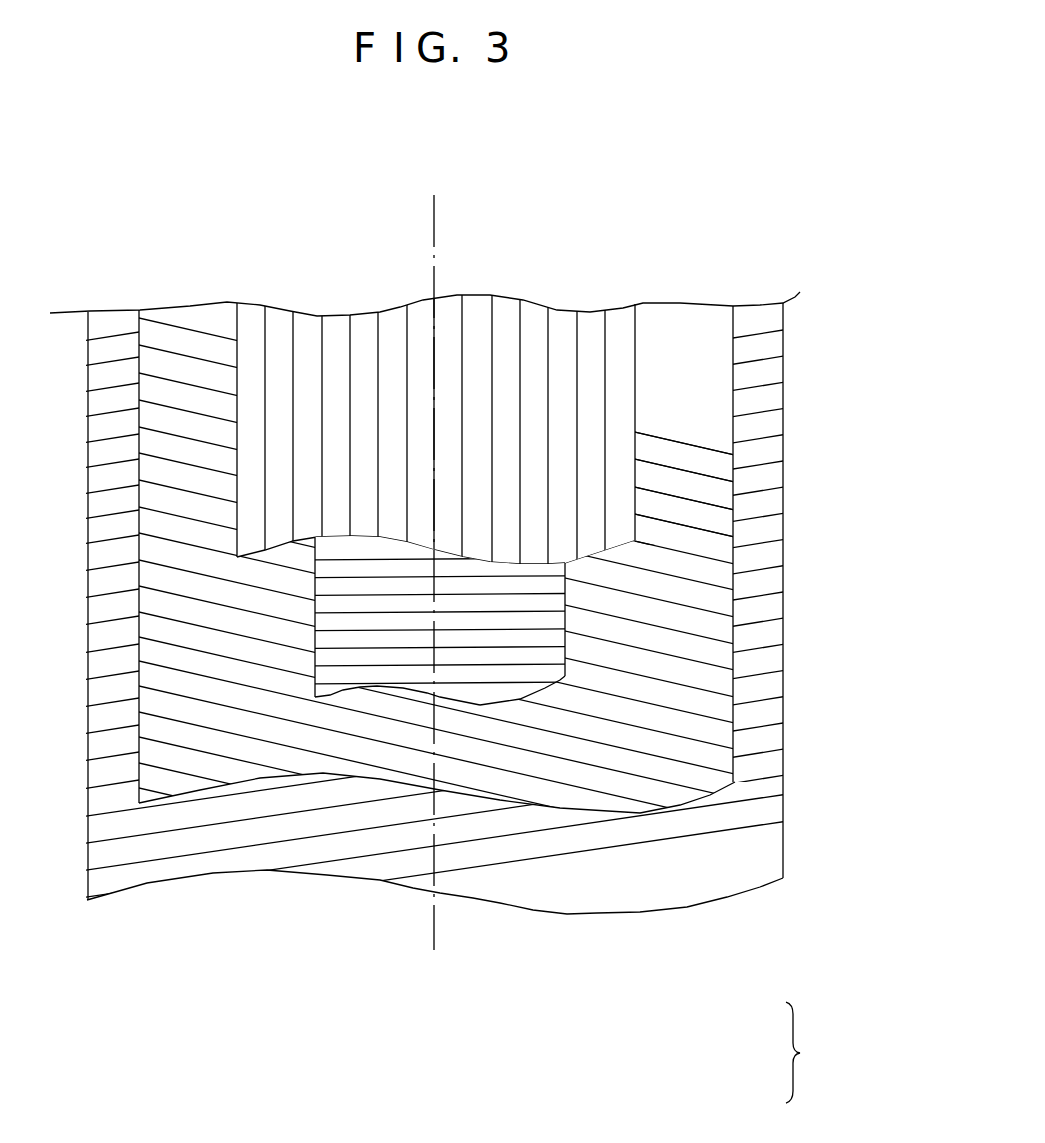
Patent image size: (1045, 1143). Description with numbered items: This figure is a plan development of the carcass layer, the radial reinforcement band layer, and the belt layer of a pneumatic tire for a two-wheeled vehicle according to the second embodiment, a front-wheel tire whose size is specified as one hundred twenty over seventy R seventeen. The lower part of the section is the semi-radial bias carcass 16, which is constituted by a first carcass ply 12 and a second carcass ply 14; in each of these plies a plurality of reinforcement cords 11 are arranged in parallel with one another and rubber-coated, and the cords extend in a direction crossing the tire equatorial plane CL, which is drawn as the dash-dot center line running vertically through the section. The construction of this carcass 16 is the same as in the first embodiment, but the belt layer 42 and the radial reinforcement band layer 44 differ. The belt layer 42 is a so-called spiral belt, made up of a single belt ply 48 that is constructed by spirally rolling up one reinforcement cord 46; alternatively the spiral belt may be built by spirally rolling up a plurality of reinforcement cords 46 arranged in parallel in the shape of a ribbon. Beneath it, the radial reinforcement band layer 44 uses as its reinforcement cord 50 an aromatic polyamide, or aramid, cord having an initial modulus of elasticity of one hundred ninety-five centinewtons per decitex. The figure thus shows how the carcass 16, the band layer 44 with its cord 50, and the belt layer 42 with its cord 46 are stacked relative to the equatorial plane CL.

The reinforcement cords 11 is at (693, 732).
The first carcass ply 12 is at (594, 814).
The second carcass ply 14 is at (690, 907).
The semi-radial bias carcass 16 is at (818, 1052).
The belt layer 42 is at (623, 550).
The radial reinforcement band layer 44 is at (527, 698).
The reinforcement cord 46 is at (578, 356).
The belt ply 48 is at (660, 468).
The reinforcement cord 50 is at (353, 665).
The tire equatorial plane CL is at (433, 227).